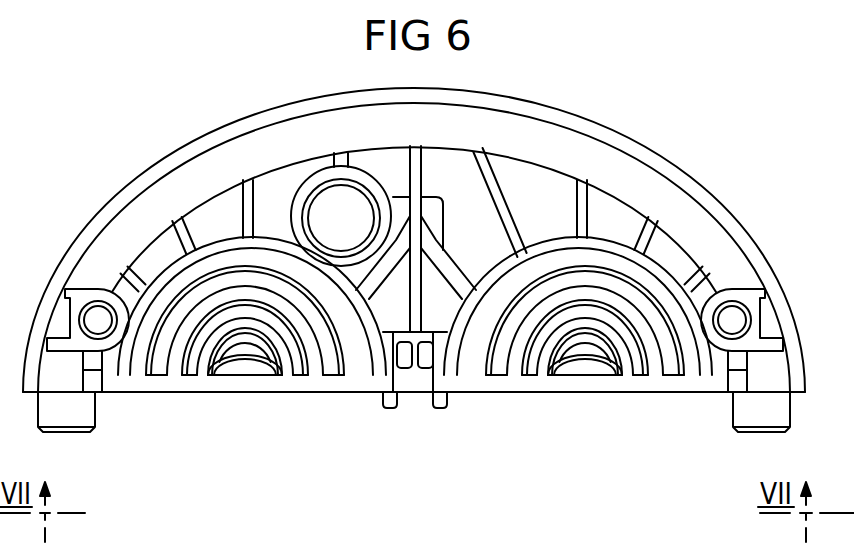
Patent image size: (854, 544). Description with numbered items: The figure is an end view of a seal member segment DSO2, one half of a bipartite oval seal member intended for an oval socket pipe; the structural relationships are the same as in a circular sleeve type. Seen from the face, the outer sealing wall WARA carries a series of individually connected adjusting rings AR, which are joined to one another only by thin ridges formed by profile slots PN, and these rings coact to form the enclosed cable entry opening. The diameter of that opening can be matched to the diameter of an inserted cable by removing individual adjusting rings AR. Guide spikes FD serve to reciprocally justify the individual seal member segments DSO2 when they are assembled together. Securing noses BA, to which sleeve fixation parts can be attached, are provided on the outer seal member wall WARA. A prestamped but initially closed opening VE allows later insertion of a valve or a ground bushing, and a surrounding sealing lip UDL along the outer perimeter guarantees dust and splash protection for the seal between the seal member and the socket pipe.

The seal member segment DSO2 is at (618, 128).
The outer sealing wall WARA is at (213, 173).
The prestamped closed opening VE is at (297, 188).
The securing nose BA is at (98, 303).
The surrounding sealing lip UDL is at (781, 307).
The guide spike FD is at (758, 412).
The profile slot PN is at (693, 366).
The adjusting ring AR is at (519, 406).